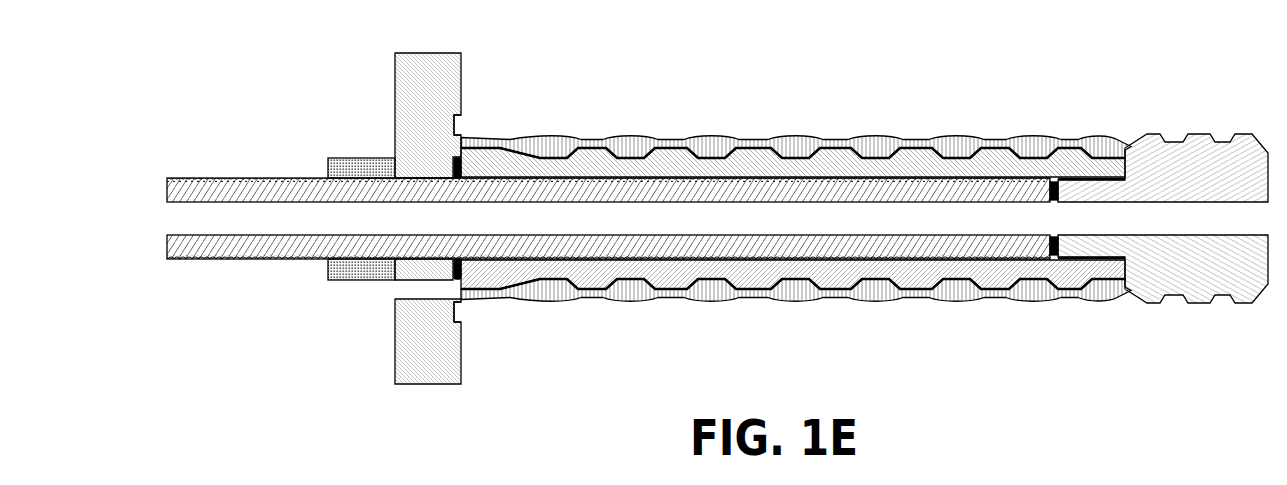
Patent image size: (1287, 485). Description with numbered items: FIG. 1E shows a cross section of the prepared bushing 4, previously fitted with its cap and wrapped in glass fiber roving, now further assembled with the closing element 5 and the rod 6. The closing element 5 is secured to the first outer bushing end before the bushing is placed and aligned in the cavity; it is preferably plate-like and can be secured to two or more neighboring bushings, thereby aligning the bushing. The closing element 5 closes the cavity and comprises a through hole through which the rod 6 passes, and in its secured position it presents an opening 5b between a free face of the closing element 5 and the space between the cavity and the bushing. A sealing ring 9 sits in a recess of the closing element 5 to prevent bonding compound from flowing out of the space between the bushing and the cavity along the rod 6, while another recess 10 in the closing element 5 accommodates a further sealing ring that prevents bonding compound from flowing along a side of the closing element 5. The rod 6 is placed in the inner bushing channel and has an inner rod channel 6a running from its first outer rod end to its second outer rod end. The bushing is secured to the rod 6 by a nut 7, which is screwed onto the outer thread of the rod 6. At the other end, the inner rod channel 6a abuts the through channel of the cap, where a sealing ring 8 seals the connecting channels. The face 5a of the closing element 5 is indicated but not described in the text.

The prepared bushing 4 is at (813, 112).
The closing element 5 is at (410, 78).
The clamp block contact surface 5a is at (422, 176).
The opening 5b is at (402, 288).
The rod 6 is at (225, 188).
The inner rod channel 6a is at (275, 213).
The nut 7 is at (343, 165).
The sealing ring 8 is at (1055, 182).
The sealing ring 9 is at (460, 165).
The recess 10 is at (457, 122).